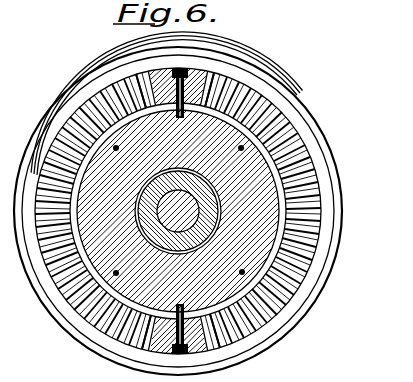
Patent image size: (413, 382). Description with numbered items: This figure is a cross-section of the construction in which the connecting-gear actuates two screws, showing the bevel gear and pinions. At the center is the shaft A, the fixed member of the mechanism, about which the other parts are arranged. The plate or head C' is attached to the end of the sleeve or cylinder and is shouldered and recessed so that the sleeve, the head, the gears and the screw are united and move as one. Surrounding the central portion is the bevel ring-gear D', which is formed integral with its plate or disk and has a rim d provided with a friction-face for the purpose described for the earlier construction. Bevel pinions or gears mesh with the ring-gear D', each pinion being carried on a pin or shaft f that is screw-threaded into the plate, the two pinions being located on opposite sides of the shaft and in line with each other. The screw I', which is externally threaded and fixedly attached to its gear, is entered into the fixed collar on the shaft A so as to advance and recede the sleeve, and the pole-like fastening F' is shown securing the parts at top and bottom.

The pin or shaft f is at (138, 80).
The pole piece with fastening bolt F' is at (207, 196).
The rim d is at (283, 83).
The screw I' is at (182, 211).
The bevel ring-gear D' is at (205, 211).
The shaft A is at (192, 211).
The plate or head C' is at (227, 211).